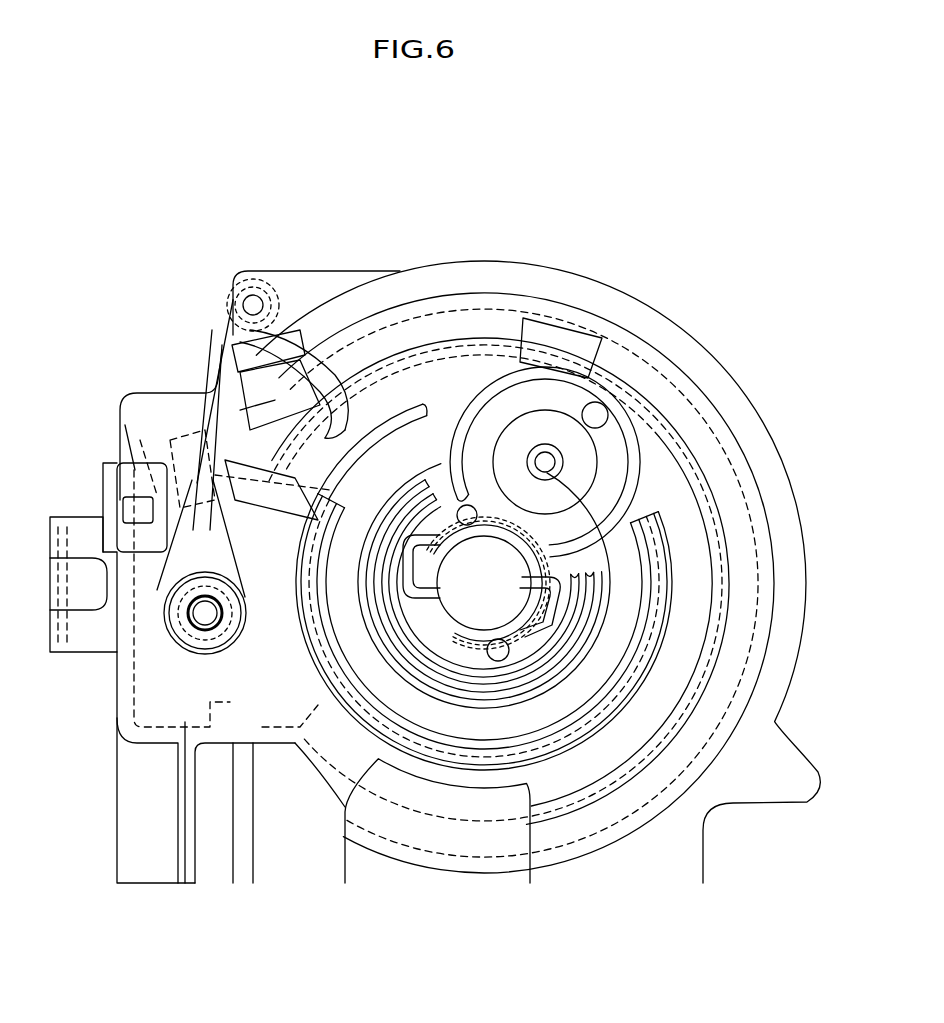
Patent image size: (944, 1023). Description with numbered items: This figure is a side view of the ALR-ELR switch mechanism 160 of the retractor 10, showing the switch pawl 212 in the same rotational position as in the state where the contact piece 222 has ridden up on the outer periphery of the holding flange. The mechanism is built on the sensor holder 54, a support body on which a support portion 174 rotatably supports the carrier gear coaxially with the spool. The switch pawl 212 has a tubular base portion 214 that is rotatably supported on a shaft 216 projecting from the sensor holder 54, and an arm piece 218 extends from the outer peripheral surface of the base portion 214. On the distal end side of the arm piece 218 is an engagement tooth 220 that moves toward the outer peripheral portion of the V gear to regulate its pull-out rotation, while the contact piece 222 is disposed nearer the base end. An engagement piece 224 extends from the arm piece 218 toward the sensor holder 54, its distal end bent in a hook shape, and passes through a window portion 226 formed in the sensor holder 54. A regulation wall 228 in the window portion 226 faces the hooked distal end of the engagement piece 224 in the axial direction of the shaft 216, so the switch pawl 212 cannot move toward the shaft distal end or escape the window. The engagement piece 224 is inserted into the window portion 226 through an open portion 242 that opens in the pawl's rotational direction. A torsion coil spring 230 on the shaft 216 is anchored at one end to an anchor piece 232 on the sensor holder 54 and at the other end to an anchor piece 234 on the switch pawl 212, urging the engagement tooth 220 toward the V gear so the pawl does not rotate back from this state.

The brake device 10 is at (683, 174).
The sensor holder 54 is at (688, 328).
The support portion 174 is at (533, 702).
The engagement tooth 220 is at (362, 430).
The ALR-ELR switch mechanism 160 is at (147, 234).
The switch pawl 212 is at (173, 395).
The anchor piece 234 is at (177, 440).
The anchor piece 232 is at (165, 455).
The torsion coil spring 230 is at (100, 612).
The arm piece 218 is at (112, 590).
The base portion 214 is at (208, 652).
The shaft 216 is at (215, 614).
The open portion 242 is at (215, 330).
The engagement piece 224 is at (214, 380).
The contact piece 222 is at (293, 498).
The window portion 226 is at (270, 385).
The regulation wall 228 is at (320, 372).